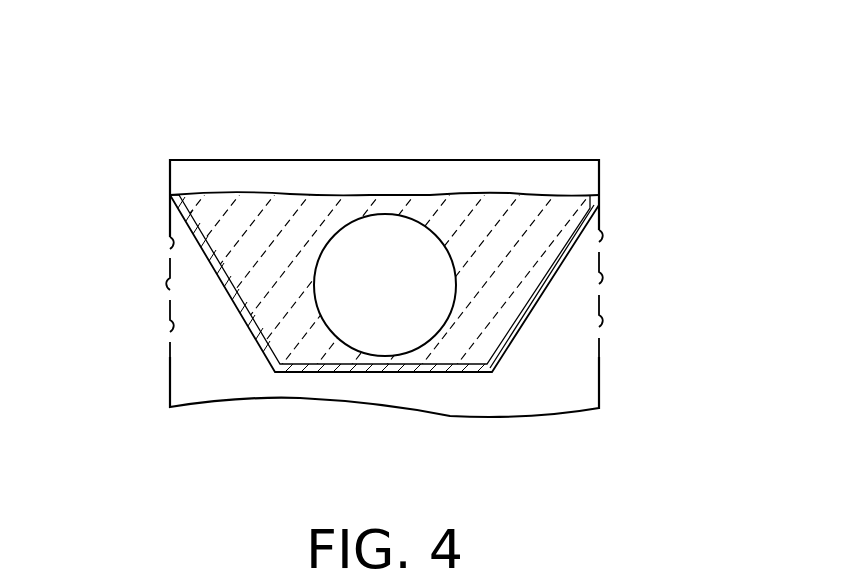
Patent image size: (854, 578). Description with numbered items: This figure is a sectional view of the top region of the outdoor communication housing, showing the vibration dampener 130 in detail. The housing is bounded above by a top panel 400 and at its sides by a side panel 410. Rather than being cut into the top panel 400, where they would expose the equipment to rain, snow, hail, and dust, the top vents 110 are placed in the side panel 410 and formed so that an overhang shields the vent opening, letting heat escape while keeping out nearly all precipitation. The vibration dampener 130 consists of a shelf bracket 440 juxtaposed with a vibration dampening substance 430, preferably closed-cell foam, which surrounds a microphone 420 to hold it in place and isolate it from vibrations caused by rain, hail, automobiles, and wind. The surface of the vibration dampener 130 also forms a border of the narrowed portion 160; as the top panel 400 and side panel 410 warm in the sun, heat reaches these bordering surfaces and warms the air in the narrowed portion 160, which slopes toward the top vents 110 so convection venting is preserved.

The top panel 400 is at (160, 160).
The side panel 410 is at (170, 148).
The vibration dampener 130 is at (350, 173).
The top vents 110 is at (162, 240).
The narrowed portion 160 is at (218, 357).
The microphone 420 is at (368, 354).
The vibration dampening substance 430 is at (453, 338).
The shelf bracket 440 is at (457, 370).